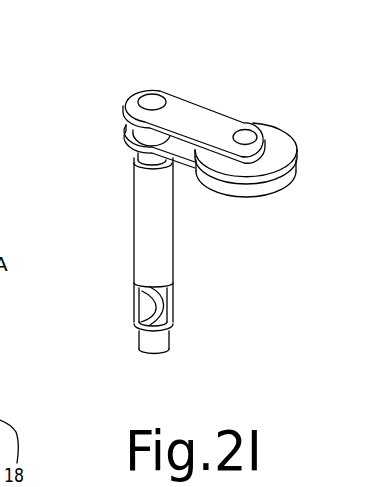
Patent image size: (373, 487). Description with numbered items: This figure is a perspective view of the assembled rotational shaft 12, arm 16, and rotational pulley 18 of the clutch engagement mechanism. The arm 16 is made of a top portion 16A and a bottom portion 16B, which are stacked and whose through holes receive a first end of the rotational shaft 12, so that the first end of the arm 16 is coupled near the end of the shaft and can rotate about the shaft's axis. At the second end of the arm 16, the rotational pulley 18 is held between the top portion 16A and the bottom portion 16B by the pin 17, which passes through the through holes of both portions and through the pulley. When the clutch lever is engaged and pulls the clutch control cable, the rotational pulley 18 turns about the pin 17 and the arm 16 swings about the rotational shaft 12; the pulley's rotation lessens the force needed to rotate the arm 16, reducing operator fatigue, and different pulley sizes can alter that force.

The rotational shaft 12 is at (173, 252).
The arm 16 is at (181, 98).
The top portion 16A is at (127, 94).
The bottom portion 16B is at (127, 150).
The pin 17 is at (246, 135).
The rotational pulley 18 is at (275, 194).